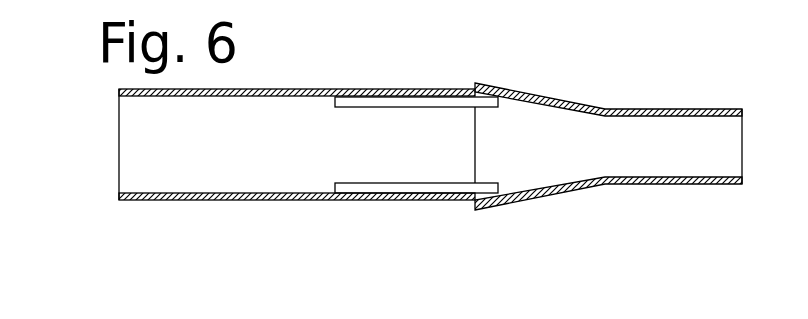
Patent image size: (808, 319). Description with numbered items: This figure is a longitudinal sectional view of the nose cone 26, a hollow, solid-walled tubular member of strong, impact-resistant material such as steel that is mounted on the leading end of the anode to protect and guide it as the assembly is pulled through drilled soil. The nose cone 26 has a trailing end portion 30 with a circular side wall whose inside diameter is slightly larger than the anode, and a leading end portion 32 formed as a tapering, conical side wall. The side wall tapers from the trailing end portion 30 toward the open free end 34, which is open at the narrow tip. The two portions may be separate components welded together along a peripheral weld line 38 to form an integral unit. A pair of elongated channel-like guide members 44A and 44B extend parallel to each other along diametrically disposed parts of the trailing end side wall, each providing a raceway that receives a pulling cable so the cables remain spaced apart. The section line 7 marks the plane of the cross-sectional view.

The nose cone 26 is at (566, 94).
The trailing end portion 30 is at (223, 198).
The leading end portion 32 is at (578, 188).
The open free end 34 is at (743, 173).
The peripheral weld line 38 is at (473, 205).
The channel-like guide member 44A is at (340, 106).
The channel-like guide member 44B is at (335, 190).
The section line 7- 7 is at (485, 50).